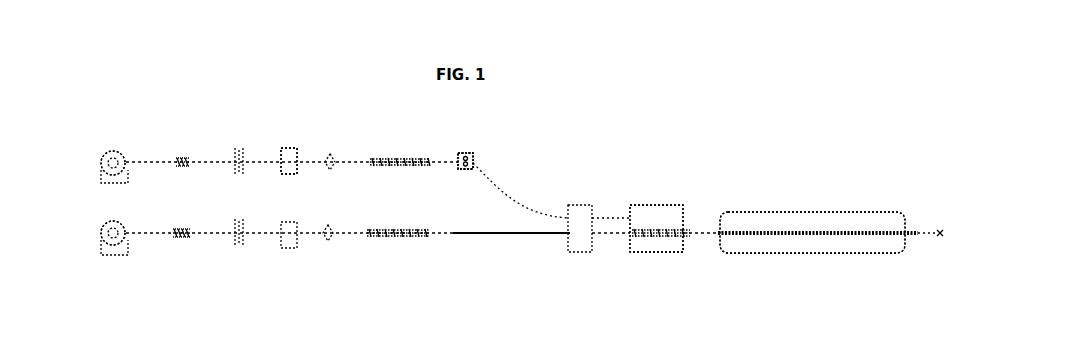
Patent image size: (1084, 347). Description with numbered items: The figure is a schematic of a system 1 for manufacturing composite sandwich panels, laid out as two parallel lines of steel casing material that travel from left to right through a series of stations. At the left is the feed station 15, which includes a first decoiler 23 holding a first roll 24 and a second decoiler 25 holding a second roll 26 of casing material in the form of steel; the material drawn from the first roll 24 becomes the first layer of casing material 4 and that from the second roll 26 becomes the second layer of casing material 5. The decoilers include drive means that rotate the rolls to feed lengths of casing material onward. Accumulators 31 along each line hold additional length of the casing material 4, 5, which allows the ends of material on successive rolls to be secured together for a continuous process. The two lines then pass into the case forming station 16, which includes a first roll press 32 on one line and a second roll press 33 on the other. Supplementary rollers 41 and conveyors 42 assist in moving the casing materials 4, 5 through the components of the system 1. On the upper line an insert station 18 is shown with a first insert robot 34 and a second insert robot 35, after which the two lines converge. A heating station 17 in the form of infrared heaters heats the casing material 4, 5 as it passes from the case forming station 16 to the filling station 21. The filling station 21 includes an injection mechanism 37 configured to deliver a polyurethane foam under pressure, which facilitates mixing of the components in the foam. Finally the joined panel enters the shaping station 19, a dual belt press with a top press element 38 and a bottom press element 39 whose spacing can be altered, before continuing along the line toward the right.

The system 1 is at (410, 272).
The first layer of casing material 4 is at (144, 232).
The second layer of casing material 5 is at (143, 161).
The feed station 15 is at (108, 283).
The case forming station 16 is at (300, 151).
The heating station 17 is at (584, 201).
The insert station 18 is at (471, 150).
The shaping station 19 is at (832, 211).
The filling station 21 is at (657, 201).
The first decoiler 23 is at (99, 252).
The first roll 24 is at (109, 224).
The second decoiler 25 is at (101, 182).
The second roll 26 is at (110, 149).
The accumulators 31 is at (186, 154).
The first roll press 32 is at (281, 172).
The second roll press 33 is at (288, 250).
The first insert robot 34 is at (477, 160).
The second insert robot 35 is at (466, 171).
The injection mechanism 37 is at (655, 240).
The top press element 38 is at (738, 221).
The bottom press element 39 is at (794, 247).
The supplementary rollers 41 is at (375, 157).
The conveyors 42 is at (376, 240).